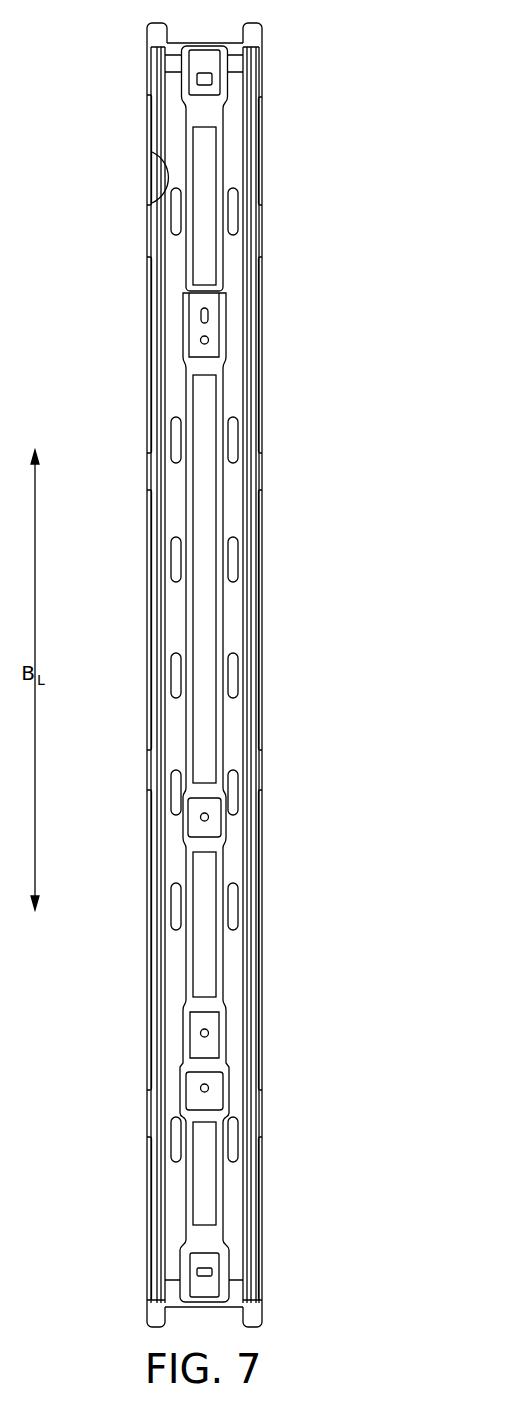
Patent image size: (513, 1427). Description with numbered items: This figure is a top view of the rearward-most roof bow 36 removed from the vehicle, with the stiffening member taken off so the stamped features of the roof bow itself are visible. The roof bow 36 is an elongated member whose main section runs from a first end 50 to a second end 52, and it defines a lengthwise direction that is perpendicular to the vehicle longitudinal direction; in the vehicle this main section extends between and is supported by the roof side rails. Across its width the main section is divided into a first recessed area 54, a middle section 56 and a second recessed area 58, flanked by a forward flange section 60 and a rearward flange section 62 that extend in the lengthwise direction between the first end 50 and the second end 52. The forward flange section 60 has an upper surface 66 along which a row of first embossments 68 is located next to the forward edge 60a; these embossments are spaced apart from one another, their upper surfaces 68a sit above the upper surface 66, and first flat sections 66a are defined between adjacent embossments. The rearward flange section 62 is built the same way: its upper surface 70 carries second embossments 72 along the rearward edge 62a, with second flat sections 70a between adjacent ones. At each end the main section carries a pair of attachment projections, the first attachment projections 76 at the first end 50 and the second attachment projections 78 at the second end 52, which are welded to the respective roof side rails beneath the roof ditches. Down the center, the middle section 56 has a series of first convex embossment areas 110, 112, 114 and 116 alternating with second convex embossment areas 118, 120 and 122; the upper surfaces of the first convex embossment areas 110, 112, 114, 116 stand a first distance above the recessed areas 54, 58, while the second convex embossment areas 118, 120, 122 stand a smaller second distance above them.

The roof bow 36 is at (322, 171).
The first end 50 is at (257, 42).
The second end 52 is at (262, 1302).
The first recessed area 54 is at (177, 492).
The middle section 56 is at (203, 507).
The second recessed area 58 is at (233, 487).
The forward flange section 60 is at (150, 285).
The forward edge 60a is at (152, 188).
The rearward flange section 62 is at (257, 349).
The rearward edge 62a is at (260, 397).
The upper surface 66 is at (160, 160).
The first flat sections 66a is at (154, 250).
The first embossments 68 is at (151, 116).
The upper surfaces 68a is at (151, 712).
The upper surface 70 is at (258, 212).
The second flat sections 70a is at (254, 250).
The second embossments 72 is at (263, 124).
The first attachment projections 76 is at (155, 33).
The second attachment projections 78 is at (157, 1315).
The first convex embossment area 110 is at (204, 156).
The first convex embossment area 112 is at (203, 628).
The first convex embossment area 114 is at (203, 945).
The first convex embossment area 116 is at (203, 1208).
The second convex embossment area 118 is at (200, 327).
The second convex embossment area 120 is at (210, 820).
The second convex embossment area 122 is at (212, 1086).